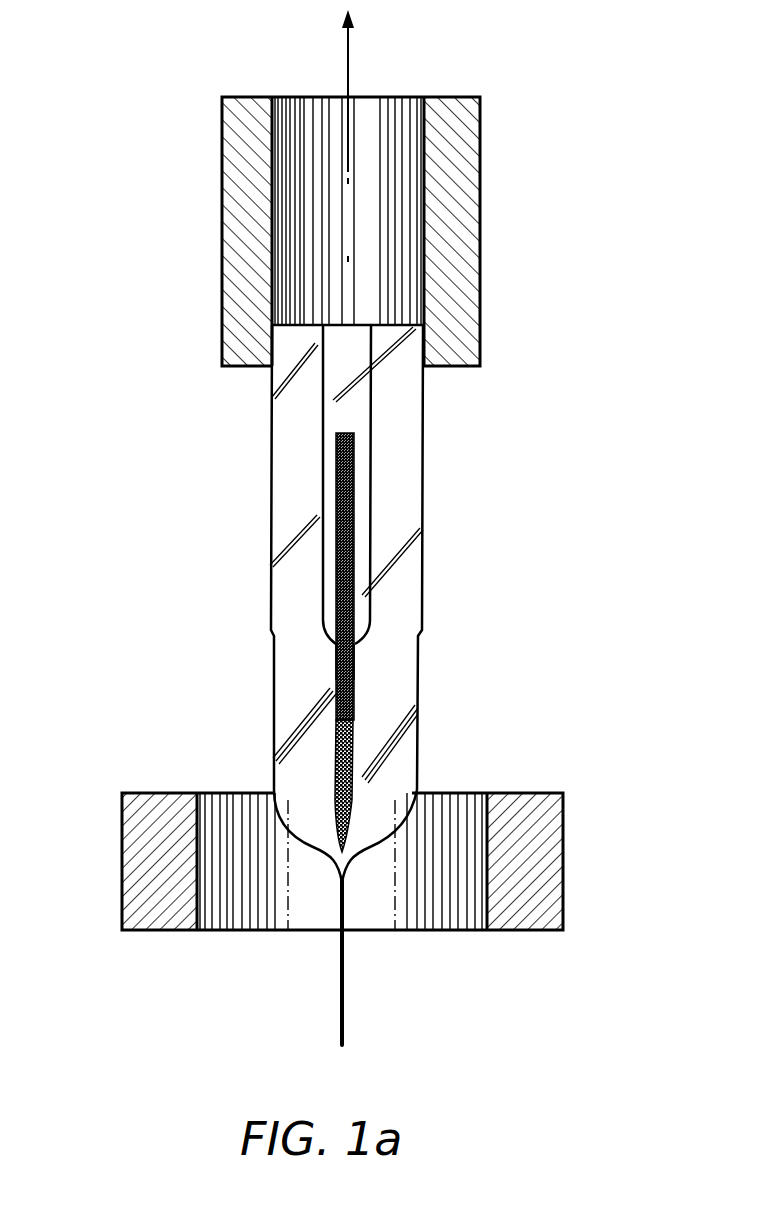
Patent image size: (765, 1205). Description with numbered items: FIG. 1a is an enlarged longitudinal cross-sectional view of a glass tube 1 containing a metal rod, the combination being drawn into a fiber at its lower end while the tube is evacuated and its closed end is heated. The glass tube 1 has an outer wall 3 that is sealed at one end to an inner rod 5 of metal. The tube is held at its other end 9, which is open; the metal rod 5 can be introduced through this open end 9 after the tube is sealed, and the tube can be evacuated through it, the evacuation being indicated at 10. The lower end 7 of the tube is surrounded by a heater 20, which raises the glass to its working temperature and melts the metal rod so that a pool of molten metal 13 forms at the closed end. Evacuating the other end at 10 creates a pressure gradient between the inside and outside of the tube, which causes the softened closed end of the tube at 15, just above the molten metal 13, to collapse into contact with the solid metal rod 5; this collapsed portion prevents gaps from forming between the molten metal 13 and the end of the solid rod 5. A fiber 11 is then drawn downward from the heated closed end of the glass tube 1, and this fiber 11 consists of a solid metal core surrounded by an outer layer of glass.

The glass tube 1 is at (426, 466).
The outer wall 3 is at (388, 698).
The inner rod 5 is at (337, 483).
The lower end 7 is at (413, 792).
The other end 9 is at (383, 324).
The evacuation location 10 is at (323, 180).
The fiber 11 is at (343, 972).
The pool of molten metal 13 is at (330, 748).
The softened closed end portion 15 is at (355, 677).
The heater 20 is at (142, 792).